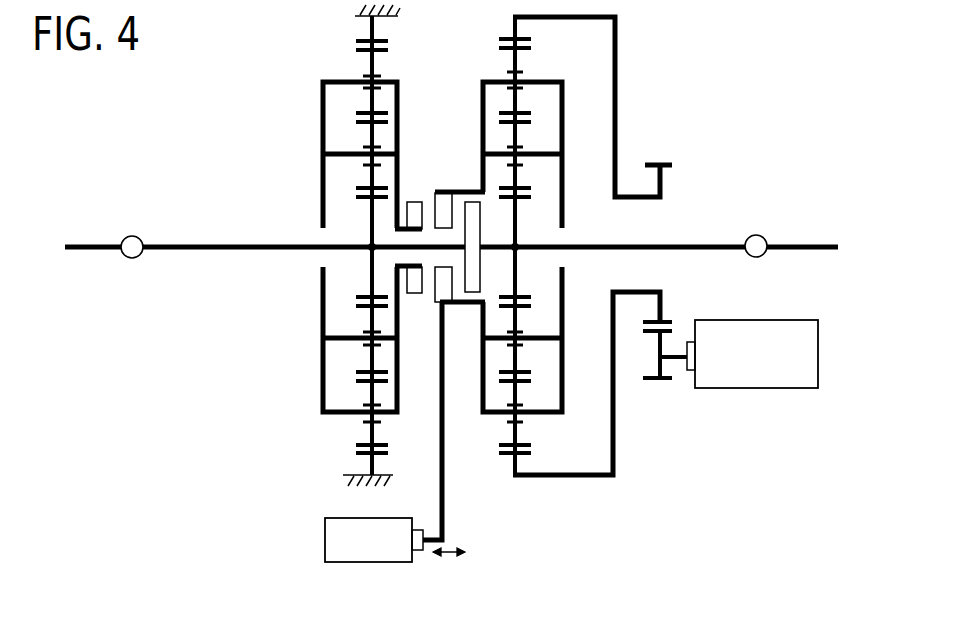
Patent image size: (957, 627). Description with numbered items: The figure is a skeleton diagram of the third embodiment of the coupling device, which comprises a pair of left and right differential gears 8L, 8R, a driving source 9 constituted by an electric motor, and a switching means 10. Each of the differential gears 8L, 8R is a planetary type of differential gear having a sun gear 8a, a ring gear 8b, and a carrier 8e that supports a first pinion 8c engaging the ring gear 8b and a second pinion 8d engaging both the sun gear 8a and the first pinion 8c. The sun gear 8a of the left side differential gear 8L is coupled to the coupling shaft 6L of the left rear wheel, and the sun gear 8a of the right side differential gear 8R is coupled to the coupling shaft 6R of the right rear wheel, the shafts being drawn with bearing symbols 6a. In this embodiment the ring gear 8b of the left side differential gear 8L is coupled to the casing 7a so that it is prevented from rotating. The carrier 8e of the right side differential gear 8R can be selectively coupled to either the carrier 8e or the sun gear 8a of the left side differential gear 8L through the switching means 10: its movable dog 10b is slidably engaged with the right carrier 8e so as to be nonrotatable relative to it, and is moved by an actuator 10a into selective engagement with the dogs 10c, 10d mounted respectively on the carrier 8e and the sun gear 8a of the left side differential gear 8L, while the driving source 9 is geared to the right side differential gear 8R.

The coupling shaft of the left rear wheel 6L is at (97, 243).
The coupling shaft of the right rear wheel 6R is at (803, 242).
The bearing 6a is at (133, 259).
The casing 7a is at (347, 480).
The left side differential gear 8L is at (422, 251).
The right side differential gear 8R is at (621, 46).
The sun gear 8a is at (363, 221).
The ring gear 8b is at (389, 42).
The first pinion 8c is at (358, 50).
The second pinion 8d is at (367, 175).
The carrier 8e is at (323, 142).
The driving source 9 is at (748, 388).
The switching means 10 is at (428, 342).
The actuator 10a is at (362, 555).
The movable dog 10b is at (443, 193).
The dog 10c is at (413, 202).
The dog 10d is at (472, 202).